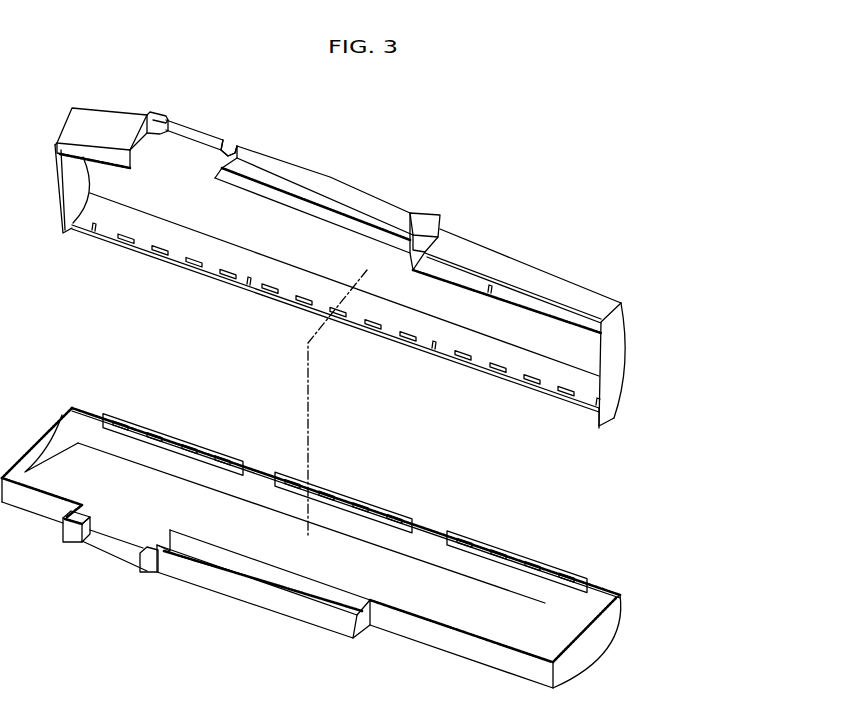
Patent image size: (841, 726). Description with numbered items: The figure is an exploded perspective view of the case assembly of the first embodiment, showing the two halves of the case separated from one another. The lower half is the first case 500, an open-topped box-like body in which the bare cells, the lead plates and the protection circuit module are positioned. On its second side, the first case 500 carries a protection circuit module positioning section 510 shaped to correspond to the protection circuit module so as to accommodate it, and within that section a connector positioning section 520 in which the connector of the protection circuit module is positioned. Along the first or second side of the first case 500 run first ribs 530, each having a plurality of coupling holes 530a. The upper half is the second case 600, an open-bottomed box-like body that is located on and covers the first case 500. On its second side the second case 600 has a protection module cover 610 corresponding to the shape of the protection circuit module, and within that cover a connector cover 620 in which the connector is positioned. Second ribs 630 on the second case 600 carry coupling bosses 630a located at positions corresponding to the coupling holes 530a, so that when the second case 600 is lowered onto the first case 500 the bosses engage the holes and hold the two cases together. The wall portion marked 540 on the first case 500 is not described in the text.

The first case 500 is at (358, 553).
The protection circuit module positioning section 510 is at (317, 615).
The connector positioning section 520 is at (77, 543).
The first ribs 530 is at (483, 545).
The coupling holes 530a is at (503, 552).
The rear wall 540 is at (592, 582).
The second case 600 is at (386, 320).
The protection module cover 610 is at (412, 222).
The connector cover 620 is at (225, 141).
The second ribs 630 is at (452, 352).
The coupling bosses 630a is at (492, 378).